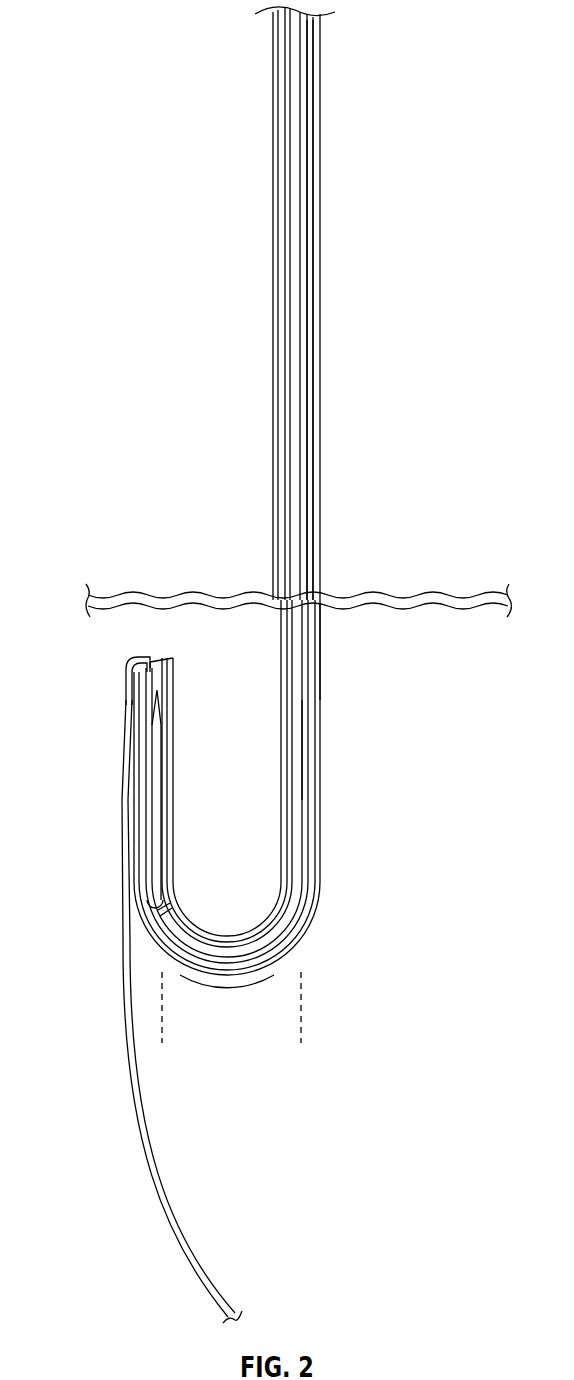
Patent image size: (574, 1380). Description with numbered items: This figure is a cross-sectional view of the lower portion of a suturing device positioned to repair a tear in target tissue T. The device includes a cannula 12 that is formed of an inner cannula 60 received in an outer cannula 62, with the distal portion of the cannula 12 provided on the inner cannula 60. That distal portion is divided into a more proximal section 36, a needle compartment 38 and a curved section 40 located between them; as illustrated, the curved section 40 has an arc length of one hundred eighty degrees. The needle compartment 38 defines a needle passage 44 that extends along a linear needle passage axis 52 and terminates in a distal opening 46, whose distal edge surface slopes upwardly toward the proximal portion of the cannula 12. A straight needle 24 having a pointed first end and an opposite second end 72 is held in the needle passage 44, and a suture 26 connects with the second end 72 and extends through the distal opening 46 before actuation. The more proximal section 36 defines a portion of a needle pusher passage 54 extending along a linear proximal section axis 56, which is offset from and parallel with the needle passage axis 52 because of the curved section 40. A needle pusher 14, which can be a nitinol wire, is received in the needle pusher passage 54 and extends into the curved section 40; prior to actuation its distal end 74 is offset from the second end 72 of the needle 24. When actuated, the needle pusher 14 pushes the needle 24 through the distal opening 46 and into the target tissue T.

The cannula 12 is at (252, 185).
The needle pusher 14 is at (300, 835).
The needle 24 is at (160, 815).
The suture 26 is at (127, 1080).
The more proximal section 36 is at (315, 630).
The needle compartment 38 is at (168, 707).
The curved section 40 is at (237, 975).
The needle passage 44 is at (160, 682).
The distal opening 46 is at (157, 657).
The linear needle passage axis 52 is at (162, 1020).
The needle pusher passage 54 is at (300, 723).
The linear proximal section axis 56 is at (301, 1005).
The inner cannula 60 is at (308, 258).
The outer cannula 62 is at (315, 283).
The second end 72 is at (150, 895).
The distal end 74 is at (165, 905).
The target tissue T is at (390, 594).